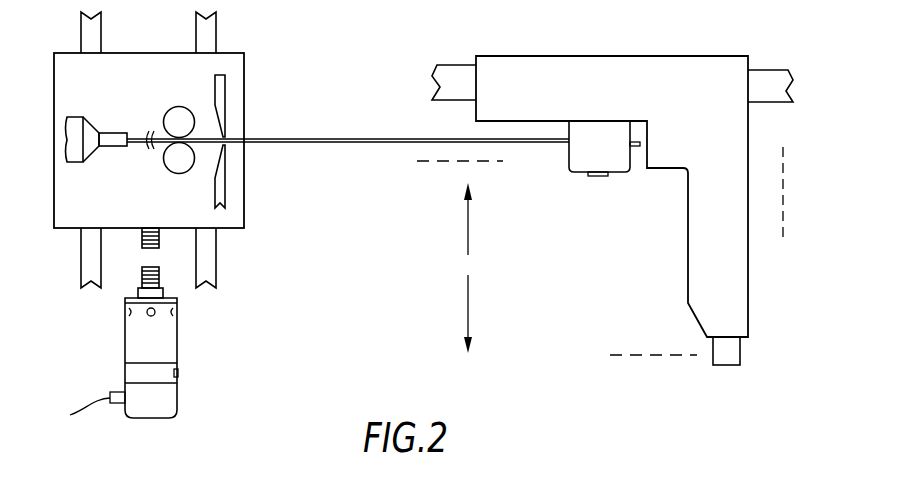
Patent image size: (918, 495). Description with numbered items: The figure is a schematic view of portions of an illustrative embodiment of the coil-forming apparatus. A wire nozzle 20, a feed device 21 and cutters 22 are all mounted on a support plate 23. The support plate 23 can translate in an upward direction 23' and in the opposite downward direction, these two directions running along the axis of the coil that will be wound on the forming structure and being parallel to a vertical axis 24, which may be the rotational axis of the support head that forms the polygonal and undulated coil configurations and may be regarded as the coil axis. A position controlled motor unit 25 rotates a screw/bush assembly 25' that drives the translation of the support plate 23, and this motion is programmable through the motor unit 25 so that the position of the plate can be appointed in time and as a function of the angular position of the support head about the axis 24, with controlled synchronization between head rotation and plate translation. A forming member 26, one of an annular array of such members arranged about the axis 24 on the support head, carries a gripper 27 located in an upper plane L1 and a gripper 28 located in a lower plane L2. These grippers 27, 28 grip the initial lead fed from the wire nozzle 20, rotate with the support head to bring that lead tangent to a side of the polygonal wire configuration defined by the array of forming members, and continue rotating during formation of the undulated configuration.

The wire nozzle 20 is at (88, 128).
The feed device 21 is at (162, 121).
The cutters 22 is at (236, 100).
The support plate 23 is at (178, 162).
The upward direction 23' is at (500, 219).
The vertical axis 24 is at (783, 200).
The position controlled motor unit 25 is at (170, 358).
The screw/bush assembly 25' is at (117, 288).
The forming member 26 is at (738, 130).
The gripper 27 is at (615, 167).
The gripper 28 is at (725, 352).
The upper plane L1 is at (430, 161).
The lower plane L2 is at (670, 355).